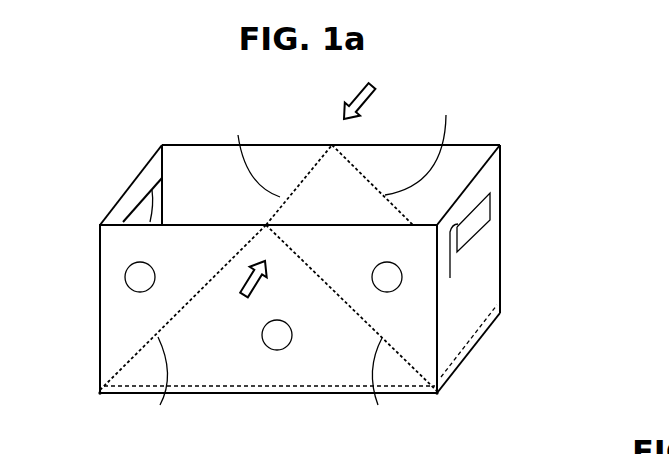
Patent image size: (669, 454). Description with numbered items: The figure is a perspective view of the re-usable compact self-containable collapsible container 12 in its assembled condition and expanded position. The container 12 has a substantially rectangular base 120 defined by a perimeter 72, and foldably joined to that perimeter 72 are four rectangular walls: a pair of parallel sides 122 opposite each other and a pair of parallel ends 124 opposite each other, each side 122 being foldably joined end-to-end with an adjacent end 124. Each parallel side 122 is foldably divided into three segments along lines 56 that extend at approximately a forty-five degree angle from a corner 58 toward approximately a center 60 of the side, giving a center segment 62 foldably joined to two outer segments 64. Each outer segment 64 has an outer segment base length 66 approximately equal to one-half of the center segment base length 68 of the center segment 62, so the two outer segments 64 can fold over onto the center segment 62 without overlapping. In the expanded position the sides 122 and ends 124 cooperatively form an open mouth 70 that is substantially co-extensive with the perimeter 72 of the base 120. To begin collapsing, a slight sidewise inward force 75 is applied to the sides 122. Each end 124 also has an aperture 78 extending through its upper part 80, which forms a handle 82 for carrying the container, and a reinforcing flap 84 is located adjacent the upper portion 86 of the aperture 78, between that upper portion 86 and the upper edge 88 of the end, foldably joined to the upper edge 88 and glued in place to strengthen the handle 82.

The collapsible container 12 is at (596, 190).
The fold lines 56 is at (301, 259).
The corner 58 is at (104, 396).
The center 60 is at (332, 145).
The center segment 62 is at (277, 335).
The outer segments 64 is at (263, 277).
The outer segment base length 66 is at (206, 223).
The center segment base length 68 is at (275, 391).
The open mouth 70 is at (467, 144).
The perimeter 72 is at (240, 394).
The sidewise inward force 75 is at (370, 87).
The aperture 78 is at (487, 227).
The upper part 80 is at (490, 183).
The handle 82 is at (132, 192).
The reinforcing flap 84 is at (148, 178).
The upper portion 86 is at (453, 263).
The upper edge 88 is at (118, 202).
The base 120 is at (324, 402).
The parallel sides 122 is at (182, 166).
The parallel ends 124 is at (470, 268).